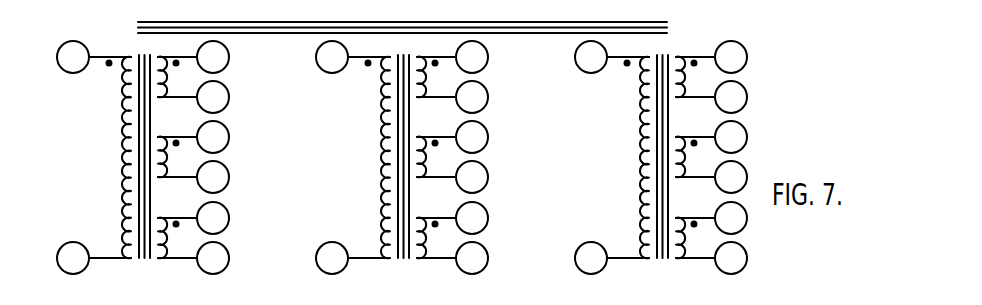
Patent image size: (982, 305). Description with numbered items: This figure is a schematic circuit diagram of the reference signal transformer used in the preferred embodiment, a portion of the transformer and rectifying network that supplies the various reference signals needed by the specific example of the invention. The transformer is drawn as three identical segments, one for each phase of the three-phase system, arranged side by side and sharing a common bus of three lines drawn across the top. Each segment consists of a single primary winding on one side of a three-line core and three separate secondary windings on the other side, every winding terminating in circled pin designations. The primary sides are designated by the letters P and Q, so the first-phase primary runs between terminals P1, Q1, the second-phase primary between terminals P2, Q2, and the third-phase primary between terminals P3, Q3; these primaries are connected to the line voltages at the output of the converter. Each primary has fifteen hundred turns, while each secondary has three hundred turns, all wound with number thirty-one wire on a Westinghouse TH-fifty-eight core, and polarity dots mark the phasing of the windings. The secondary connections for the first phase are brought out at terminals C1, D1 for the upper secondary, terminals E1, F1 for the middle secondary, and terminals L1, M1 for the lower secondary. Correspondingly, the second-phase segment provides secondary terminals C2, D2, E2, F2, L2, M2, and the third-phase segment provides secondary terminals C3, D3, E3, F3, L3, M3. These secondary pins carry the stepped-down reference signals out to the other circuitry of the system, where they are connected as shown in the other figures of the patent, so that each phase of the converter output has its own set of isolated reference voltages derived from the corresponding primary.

The primary terminal P1 is at (94, 57).
The primary terminal Q1 is at (94, 258).
The secondary terminal C1 is at (193, 57).
The secondary terminal D1 is at (193, 97).
The secondary terminal E1 is at (193, 137).
The secondary terminal F1 is at (193, 177).
The secondary terminal L1 is at (193, 218).
The secondary terminal M1 is at (193, 258).
The primary terminal P2 is at (353, 57).
The primary terminal Q2 is at (353, 258).
The secondary terminal C2 is at (452, 57).
The secondary terminal D2 is at (452, 97).
The secondary terminal E2 is at (452, 137).
The secondary terminal F2 is at (452, 177).
The secondary terminal L2 is at (452, 218).
The secondary terminal M2 is at (452, 258).
The primary terminal P3 is at (612, 57).
The primary terminal Q3 is at (612, 258).
The secondary terminal C3 is at (711, 57).
The secondary terminal D3 is at (711, 97).
The secondary terminal E3 is at (711, 137).
The secondary terminal F3 is at (711, 177).
The secondary terminal L3 is at (711, 218).
The secondary terminal M3 is at (711, 258).